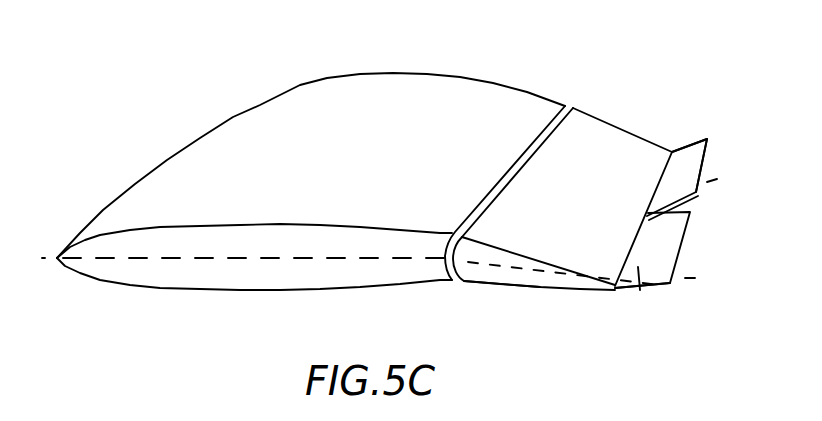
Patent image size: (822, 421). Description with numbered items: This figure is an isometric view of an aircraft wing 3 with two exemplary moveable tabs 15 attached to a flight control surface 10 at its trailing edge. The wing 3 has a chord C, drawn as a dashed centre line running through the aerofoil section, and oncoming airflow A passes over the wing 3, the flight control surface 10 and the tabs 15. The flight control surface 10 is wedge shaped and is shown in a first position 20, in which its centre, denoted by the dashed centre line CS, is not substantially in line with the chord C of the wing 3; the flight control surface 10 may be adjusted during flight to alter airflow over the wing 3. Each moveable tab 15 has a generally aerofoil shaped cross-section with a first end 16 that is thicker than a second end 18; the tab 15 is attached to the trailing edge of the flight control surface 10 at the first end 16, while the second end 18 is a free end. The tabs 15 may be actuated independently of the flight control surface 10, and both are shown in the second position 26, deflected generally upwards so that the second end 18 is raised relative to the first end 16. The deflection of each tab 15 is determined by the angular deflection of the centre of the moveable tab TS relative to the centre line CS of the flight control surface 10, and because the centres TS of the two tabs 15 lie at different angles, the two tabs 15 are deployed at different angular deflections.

The wing 3 is at (370, 93).
The chord C is at (203, 262).
The oncoming airflow A is at (148, 133).
The first position 20 is at (584, 92).
The centre line of flight control surface CS is at (498, 268).
The flight control surface 10 is at (548, 287).
The moveable tab 15 is at (678, 150).
The second position 26 is at (709, 117).
The second end 18 is at (700, 174).
The first end 16 is at (615, 289).
The centre of moveable tab TS is at (698, 192).